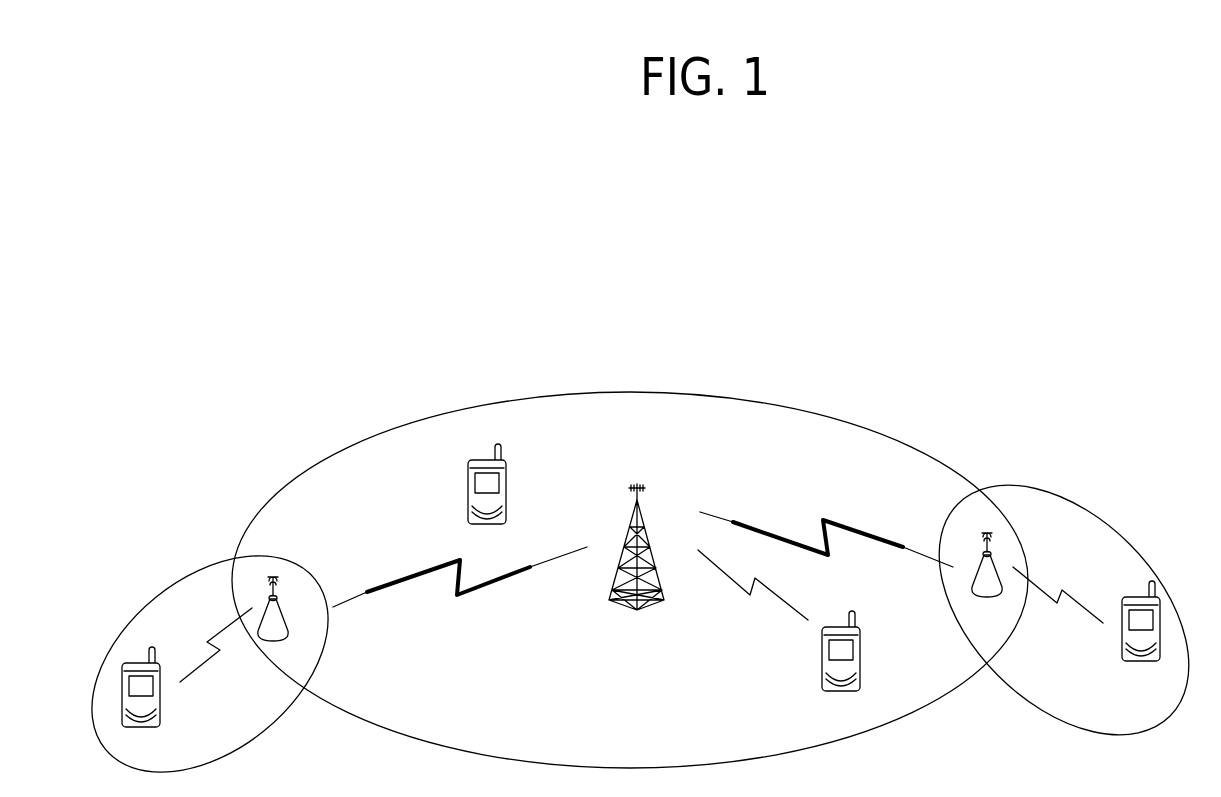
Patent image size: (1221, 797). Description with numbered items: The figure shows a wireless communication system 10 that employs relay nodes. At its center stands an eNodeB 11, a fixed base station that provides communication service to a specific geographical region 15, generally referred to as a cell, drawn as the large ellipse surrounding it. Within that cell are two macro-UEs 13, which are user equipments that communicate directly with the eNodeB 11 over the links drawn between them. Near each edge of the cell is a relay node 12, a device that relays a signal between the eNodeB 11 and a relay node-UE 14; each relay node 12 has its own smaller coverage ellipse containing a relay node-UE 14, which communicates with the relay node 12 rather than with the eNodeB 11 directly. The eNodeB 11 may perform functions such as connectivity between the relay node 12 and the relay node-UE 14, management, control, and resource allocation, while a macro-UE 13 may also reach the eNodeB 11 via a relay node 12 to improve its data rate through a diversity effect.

The wireless communication system 10 is at (818, 374).
The eNodeB 11 is at (642, 512).
The relay node 12 is at (283, 603).
The macro-UE 13 is at (467, 491).
The relay node-UE 14 is at (161, 703).
The specific geographical region 15 is at (603, 392).